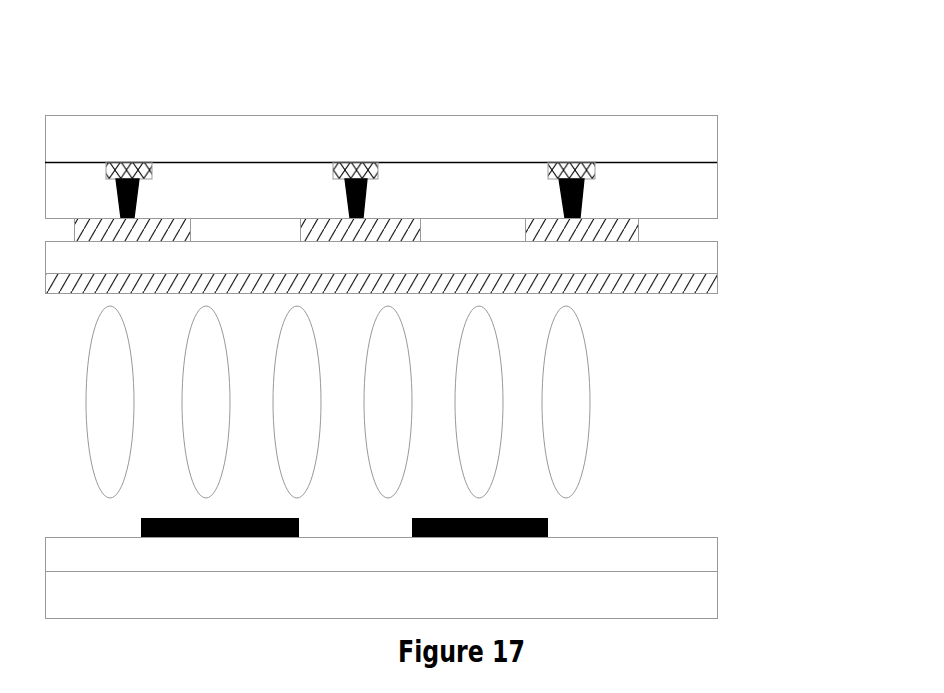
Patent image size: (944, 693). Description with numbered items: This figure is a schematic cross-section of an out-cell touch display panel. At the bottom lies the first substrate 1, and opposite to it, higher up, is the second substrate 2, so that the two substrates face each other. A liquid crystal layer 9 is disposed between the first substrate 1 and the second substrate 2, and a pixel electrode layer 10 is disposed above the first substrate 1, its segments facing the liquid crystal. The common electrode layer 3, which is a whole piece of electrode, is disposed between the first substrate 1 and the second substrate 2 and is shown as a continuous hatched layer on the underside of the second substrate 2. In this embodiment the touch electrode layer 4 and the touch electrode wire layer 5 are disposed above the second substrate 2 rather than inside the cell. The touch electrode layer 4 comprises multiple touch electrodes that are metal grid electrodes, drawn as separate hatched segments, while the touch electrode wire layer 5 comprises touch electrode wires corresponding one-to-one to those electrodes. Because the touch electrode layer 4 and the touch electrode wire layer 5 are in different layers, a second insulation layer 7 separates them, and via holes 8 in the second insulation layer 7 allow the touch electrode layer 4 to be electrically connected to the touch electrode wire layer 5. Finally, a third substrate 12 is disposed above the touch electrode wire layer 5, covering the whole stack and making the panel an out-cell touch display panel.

The first substrate 1 is at (718, 593).
The second substrate 2 is at (717, 264).
The common electrode layer 3 is at (708, 292).
The touch electrode layer 4 is at (638, 230).
The touch electrode wire layer 5 is at (592, 168).
The second insulation layer 7 is at (710, 183).
The via holes 8 is at (585, 198).
The liquid crystal layer 9 is at (590, 388).
The pixel electrode layer 10 is at (553, 523).
The third substrate 12 is at (420, 128).